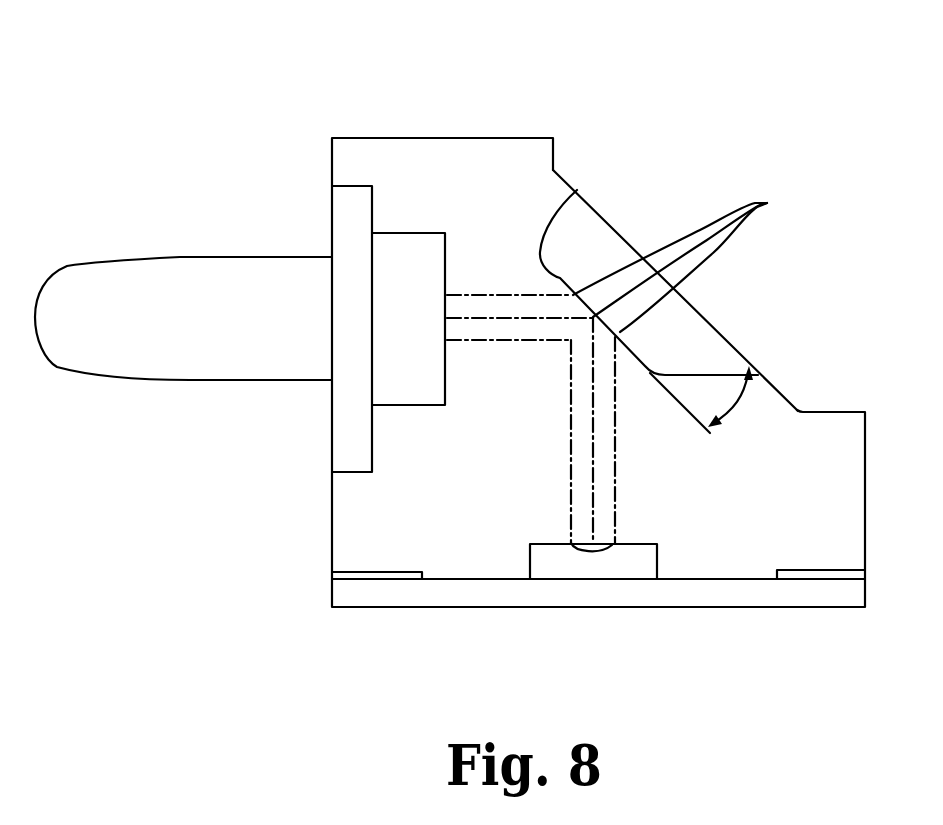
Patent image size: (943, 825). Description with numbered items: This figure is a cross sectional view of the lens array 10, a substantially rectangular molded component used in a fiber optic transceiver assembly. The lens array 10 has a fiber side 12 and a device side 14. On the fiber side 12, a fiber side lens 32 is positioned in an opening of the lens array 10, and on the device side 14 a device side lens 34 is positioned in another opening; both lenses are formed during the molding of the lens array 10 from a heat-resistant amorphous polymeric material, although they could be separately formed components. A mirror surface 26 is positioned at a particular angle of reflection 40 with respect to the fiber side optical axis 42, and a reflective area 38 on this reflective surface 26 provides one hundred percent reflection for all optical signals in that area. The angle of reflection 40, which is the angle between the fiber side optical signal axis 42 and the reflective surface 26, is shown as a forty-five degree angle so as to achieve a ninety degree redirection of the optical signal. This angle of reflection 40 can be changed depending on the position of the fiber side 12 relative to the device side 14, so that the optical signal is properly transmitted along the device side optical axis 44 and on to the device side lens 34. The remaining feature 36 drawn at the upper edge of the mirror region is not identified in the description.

The lens array 10 is at (660, 193).
The fiber side 12 is at (437, 332).
The device side 14 is at (570, 542).
The mirror surface 26 is at (742, 331).
The fiber side lens 32 is at (447, 330).
The device side lens 34 is at (590, 548).
The lever arm 36 is at (575, 191).
The reflective area 38 is at (691, 259).
The angle of reflection 40 is at (738, 394).
The fiber side optical axis 42 is at (452, 312).
The device side optical axis 44 is at (592, 498).